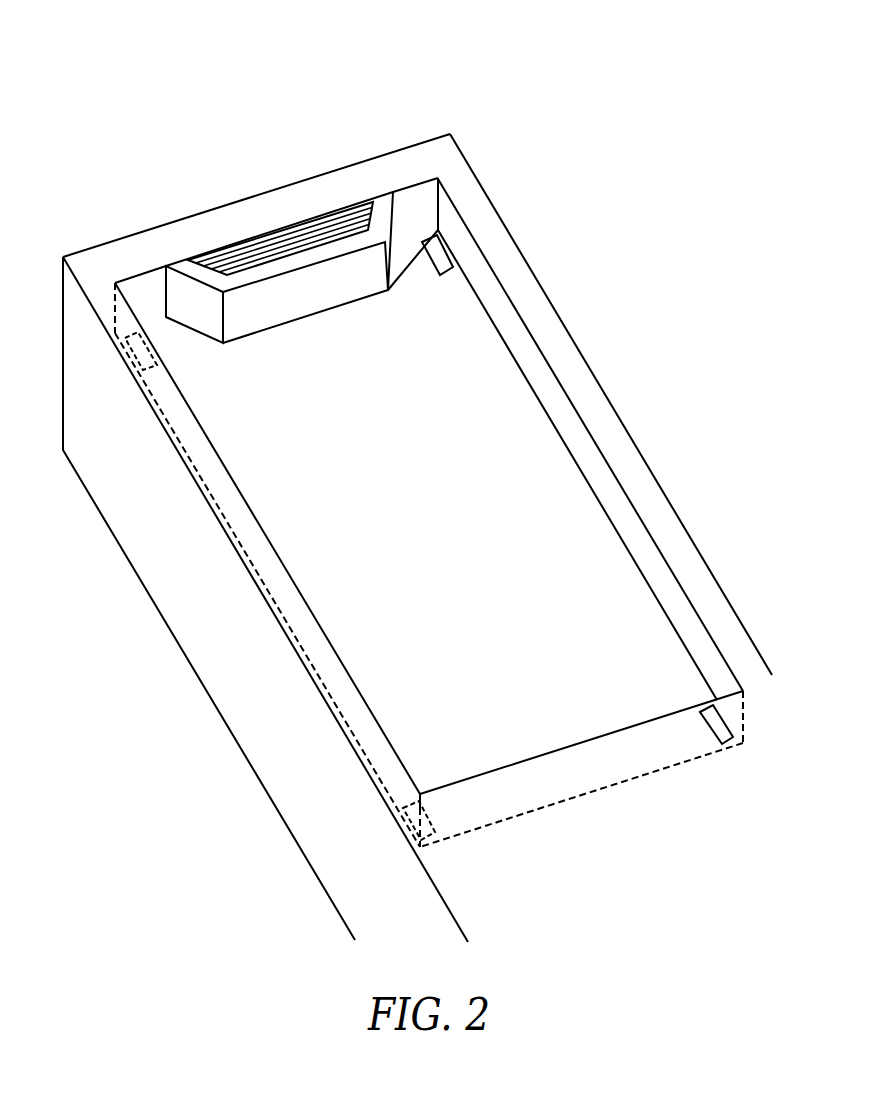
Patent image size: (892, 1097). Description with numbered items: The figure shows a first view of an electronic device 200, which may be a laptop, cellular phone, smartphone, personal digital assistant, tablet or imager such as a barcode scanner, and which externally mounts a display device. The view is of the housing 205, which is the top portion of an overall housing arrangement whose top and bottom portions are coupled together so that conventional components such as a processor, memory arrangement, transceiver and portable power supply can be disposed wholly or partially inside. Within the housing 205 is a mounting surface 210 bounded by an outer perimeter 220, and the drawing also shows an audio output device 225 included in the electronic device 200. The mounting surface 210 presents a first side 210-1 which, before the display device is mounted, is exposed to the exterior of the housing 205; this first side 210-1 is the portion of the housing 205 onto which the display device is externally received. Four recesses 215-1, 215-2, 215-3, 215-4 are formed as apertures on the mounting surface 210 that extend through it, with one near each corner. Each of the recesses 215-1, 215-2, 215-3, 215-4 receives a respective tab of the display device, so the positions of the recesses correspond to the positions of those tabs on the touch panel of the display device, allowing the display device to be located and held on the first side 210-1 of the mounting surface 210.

The electronic device 200 is at (590, 84).
The housing 205 is at (417, 538).
The mounting surface 210 is at (462, 512).
The first side of mounting surface 210-1 is at (623, 465).
The recess 215-1 is at (215, 367).
The recess 215-2 is at (418, 294).
The recess 215-3 is at (475, 855).
The recess 215-4 is at (696, 770).
The outer perimeter 220 is at (429, 486).
The audio output device 225 is at (302, 205).